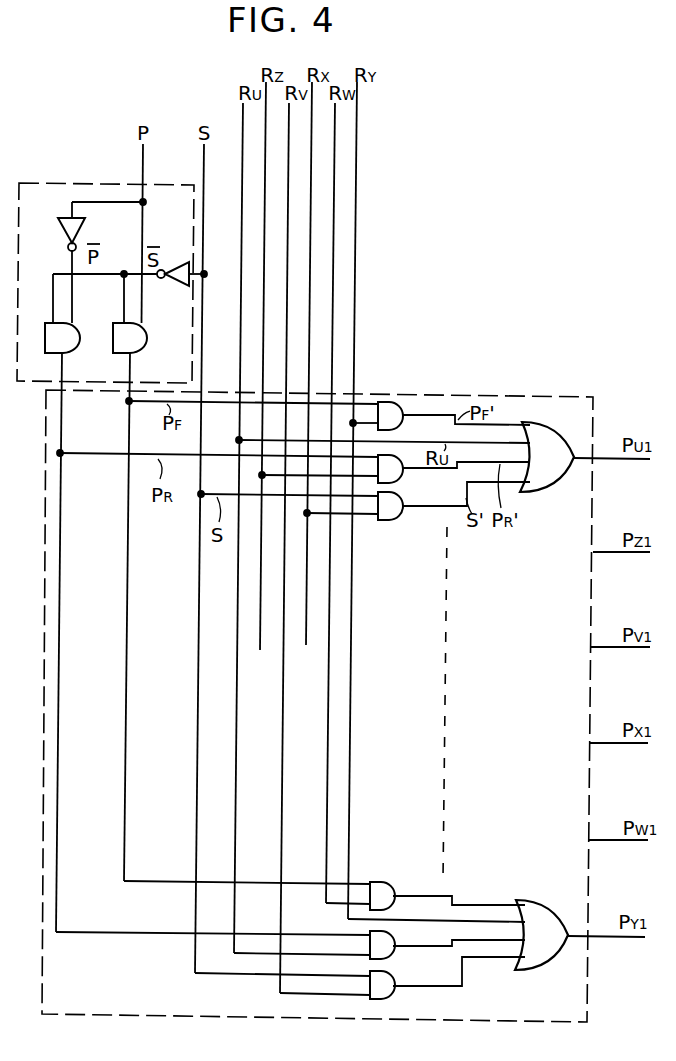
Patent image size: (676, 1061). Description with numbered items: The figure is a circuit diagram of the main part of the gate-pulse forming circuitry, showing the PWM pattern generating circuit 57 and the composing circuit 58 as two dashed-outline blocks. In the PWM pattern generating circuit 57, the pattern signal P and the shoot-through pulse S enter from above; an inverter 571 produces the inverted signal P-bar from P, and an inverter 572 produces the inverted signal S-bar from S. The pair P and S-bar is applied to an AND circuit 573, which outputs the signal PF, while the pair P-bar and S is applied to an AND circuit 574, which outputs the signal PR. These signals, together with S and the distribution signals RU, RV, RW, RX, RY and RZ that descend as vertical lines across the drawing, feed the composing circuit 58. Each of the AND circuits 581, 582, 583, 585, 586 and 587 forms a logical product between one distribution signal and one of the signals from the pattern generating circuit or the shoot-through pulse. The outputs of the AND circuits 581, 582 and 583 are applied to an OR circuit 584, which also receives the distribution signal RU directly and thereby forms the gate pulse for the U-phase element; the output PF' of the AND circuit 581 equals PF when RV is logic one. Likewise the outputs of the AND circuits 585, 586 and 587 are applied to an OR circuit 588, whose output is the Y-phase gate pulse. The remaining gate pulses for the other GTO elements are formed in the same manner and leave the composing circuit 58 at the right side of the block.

The PWM pattern generating circuit 57 is at (63, 183).
The inverter 571 is at (60, 229).
The inverter 572 is at (171, 289).
The AND circuit 573 is at (114, 341).
The AND circuit 574 is at (47, 342).
The composing circuit 58 is at (576, 398).
The AND circuit 581 is at (400, 424).
The AND circuit 582 is at (400, 478).
The AND circuit 583 is at (400, 515).
The OR circuit 584 is at (546, 490).
The AND circuit 585 is at (392, 905).
The AND circuit 586 is at (392, 955).
The AND circuit 587 is at (392, 995).
The OR circuit 588 is at (553, 958).